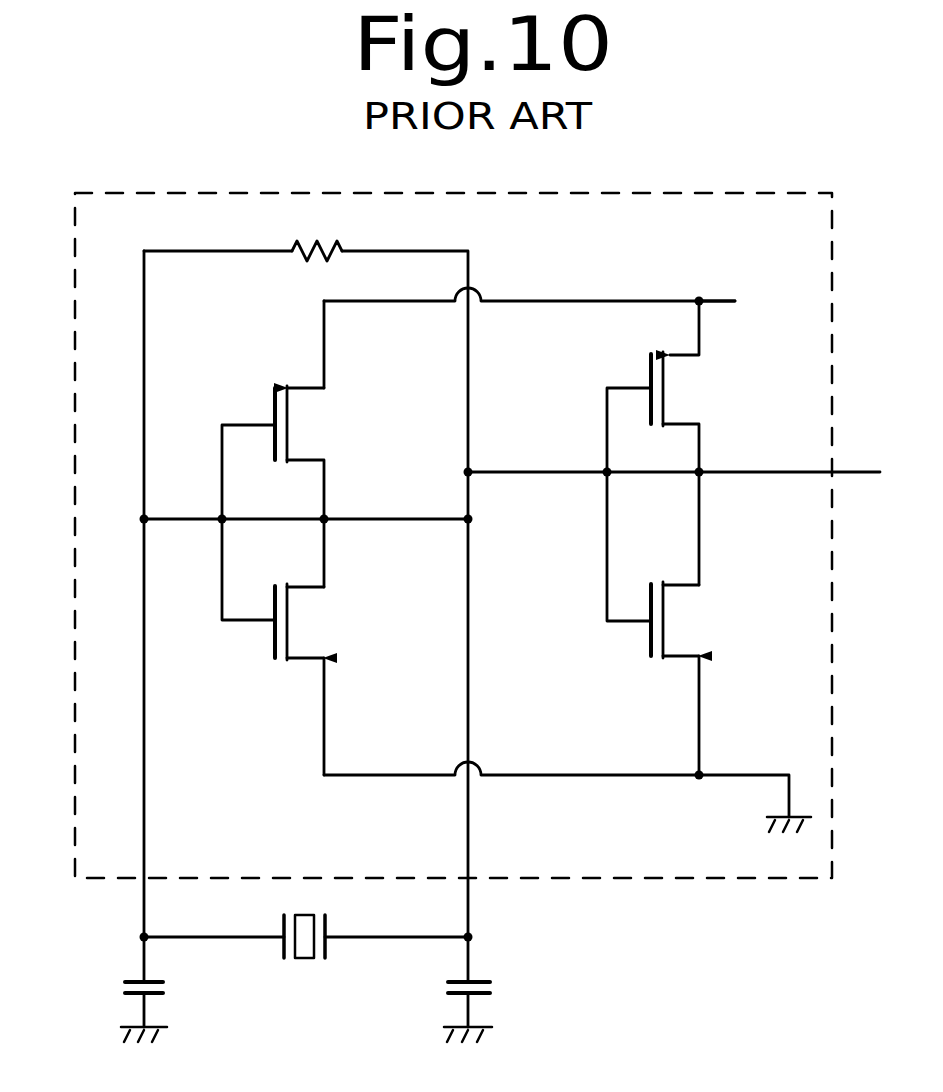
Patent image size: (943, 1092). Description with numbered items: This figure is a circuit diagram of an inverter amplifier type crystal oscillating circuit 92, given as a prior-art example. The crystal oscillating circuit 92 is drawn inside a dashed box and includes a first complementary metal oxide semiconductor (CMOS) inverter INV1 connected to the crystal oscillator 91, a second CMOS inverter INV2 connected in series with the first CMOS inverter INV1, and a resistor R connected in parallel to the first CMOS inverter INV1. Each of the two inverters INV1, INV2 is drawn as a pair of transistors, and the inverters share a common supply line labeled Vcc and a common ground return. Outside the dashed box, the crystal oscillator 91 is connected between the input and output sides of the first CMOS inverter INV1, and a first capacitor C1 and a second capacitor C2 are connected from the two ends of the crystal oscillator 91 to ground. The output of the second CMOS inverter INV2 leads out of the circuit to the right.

The resistor R is at (317, 231).
The first CMOS inverter INV1 is at (250, 412).
The second CMOS inverter INV2 is at (617, 383).
The power supply voltage Vcc is at (750, 303).
The first capacitor C1 is at (121, 985).
The second capacitor C2 is at (492, 985).
The crystal oscillator 91 is at (305, 966).
The crystal oscillating circuit 92 is at (698, 880).